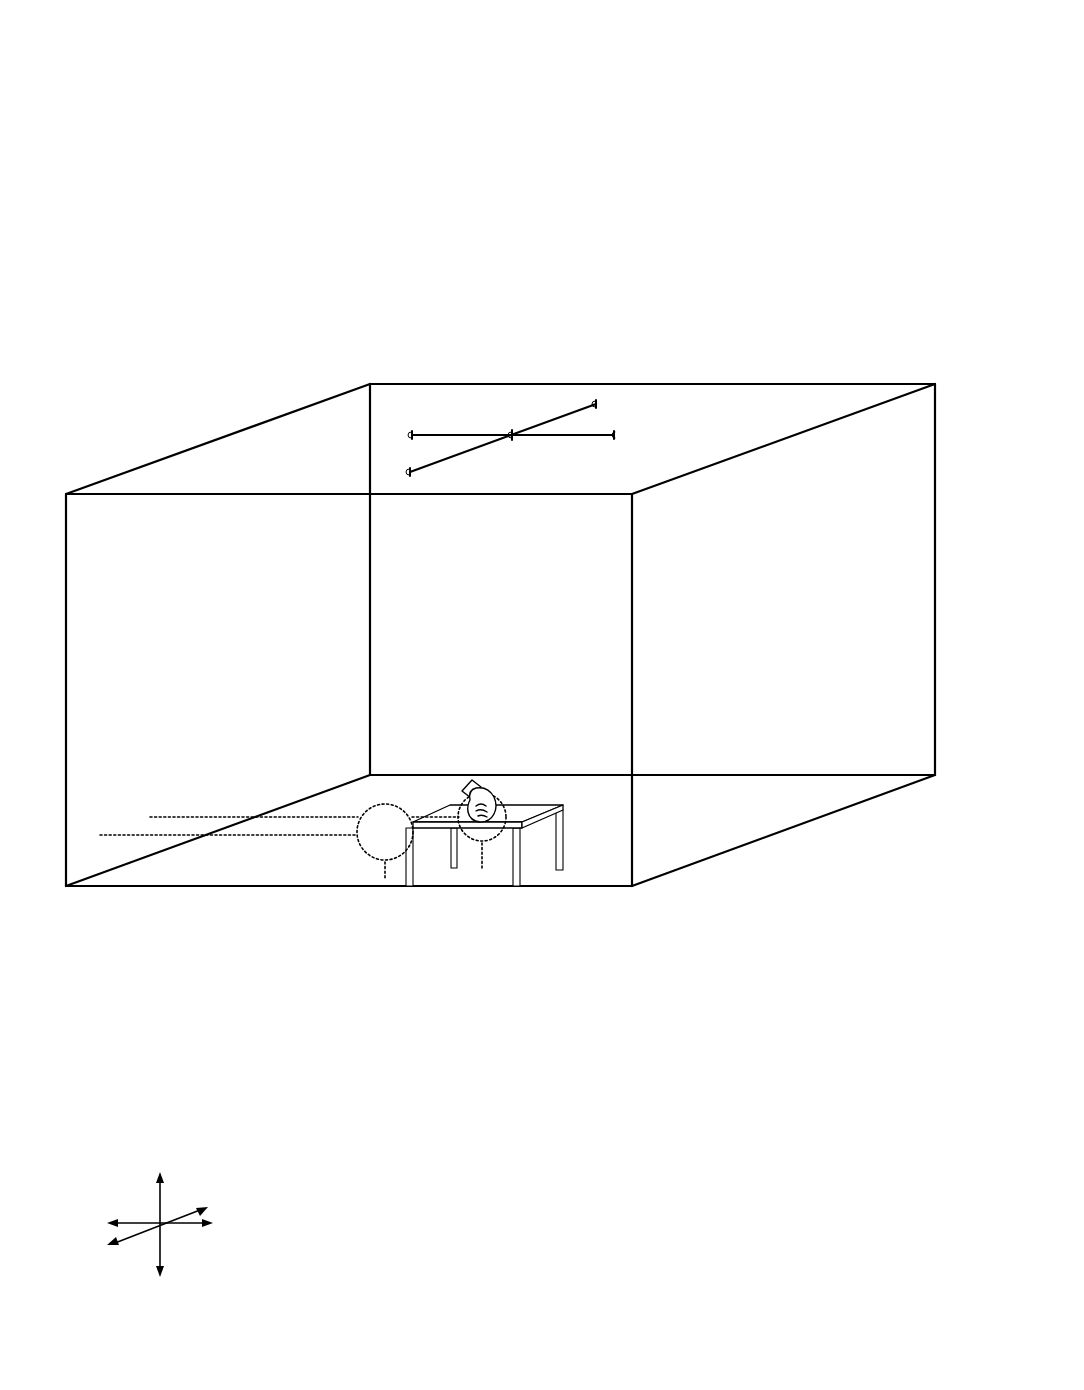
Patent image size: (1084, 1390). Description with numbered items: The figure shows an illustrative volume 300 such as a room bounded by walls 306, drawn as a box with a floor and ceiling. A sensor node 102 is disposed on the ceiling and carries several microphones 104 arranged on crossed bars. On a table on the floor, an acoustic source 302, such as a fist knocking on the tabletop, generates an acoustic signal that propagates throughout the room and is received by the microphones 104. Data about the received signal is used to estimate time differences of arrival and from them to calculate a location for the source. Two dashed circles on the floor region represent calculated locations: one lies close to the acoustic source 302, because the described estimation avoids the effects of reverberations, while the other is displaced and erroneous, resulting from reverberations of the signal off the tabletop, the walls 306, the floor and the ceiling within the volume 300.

The volume 300 is at (819, 31).
The sensor node 102 is at (499, 416).
The microphones 104 is at (599, 400).
The acoustic source 302 is at (492, 834).
The walls 306 is at (632, 808).